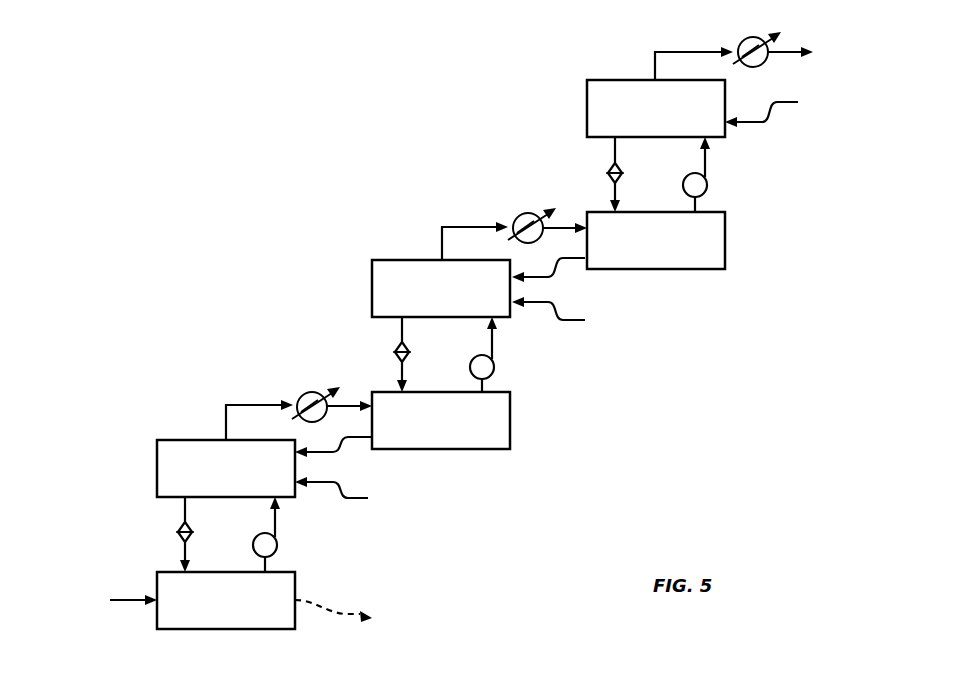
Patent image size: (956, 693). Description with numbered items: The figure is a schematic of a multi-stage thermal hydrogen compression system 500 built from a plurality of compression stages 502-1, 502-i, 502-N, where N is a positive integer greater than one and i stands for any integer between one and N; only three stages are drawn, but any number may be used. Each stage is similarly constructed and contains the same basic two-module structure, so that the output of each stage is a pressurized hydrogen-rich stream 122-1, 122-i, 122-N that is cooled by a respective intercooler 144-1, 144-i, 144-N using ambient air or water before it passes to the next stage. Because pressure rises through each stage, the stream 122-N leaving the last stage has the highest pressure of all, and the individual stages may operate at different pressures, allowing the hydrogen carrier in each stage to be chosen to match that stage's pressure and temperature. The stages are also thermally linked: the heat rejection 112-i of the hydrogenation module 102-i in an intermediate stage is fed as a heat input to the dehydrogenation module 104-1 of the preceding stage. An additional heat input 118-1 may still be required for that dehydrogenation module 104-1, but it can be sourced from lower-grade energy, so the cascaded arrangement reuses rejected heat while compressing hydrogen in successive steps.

The multi-stage thermal hydrogen compression system 500 is at (212, 116).
The first compression stage 502-1 is at (118, 424).
The intermediate compression stage 502-i is at (118, 215).
The final compression stage 502-N is at (823, 52).
The dehydrogenation module 104-1 is at (208, 437).
The hydrogenation module 102-i is at (483, 450).
The heat rejection 112-i is at (330, 450).
The additional heat input 118-1 is at (357, 500).
The pressurized hydrogen-rich stream 122-1 is at (242, 403).
The pressurized hydrogen-rich stream 122-i is at (460, 225).
The pressurized hydrogen-rich stream 122-N is at (696, 50).
The intercooler 144-1 is at (302, 393).
The intercooler 144-i is at (517, 216).
The intercooler 144-N is at (742, 40).